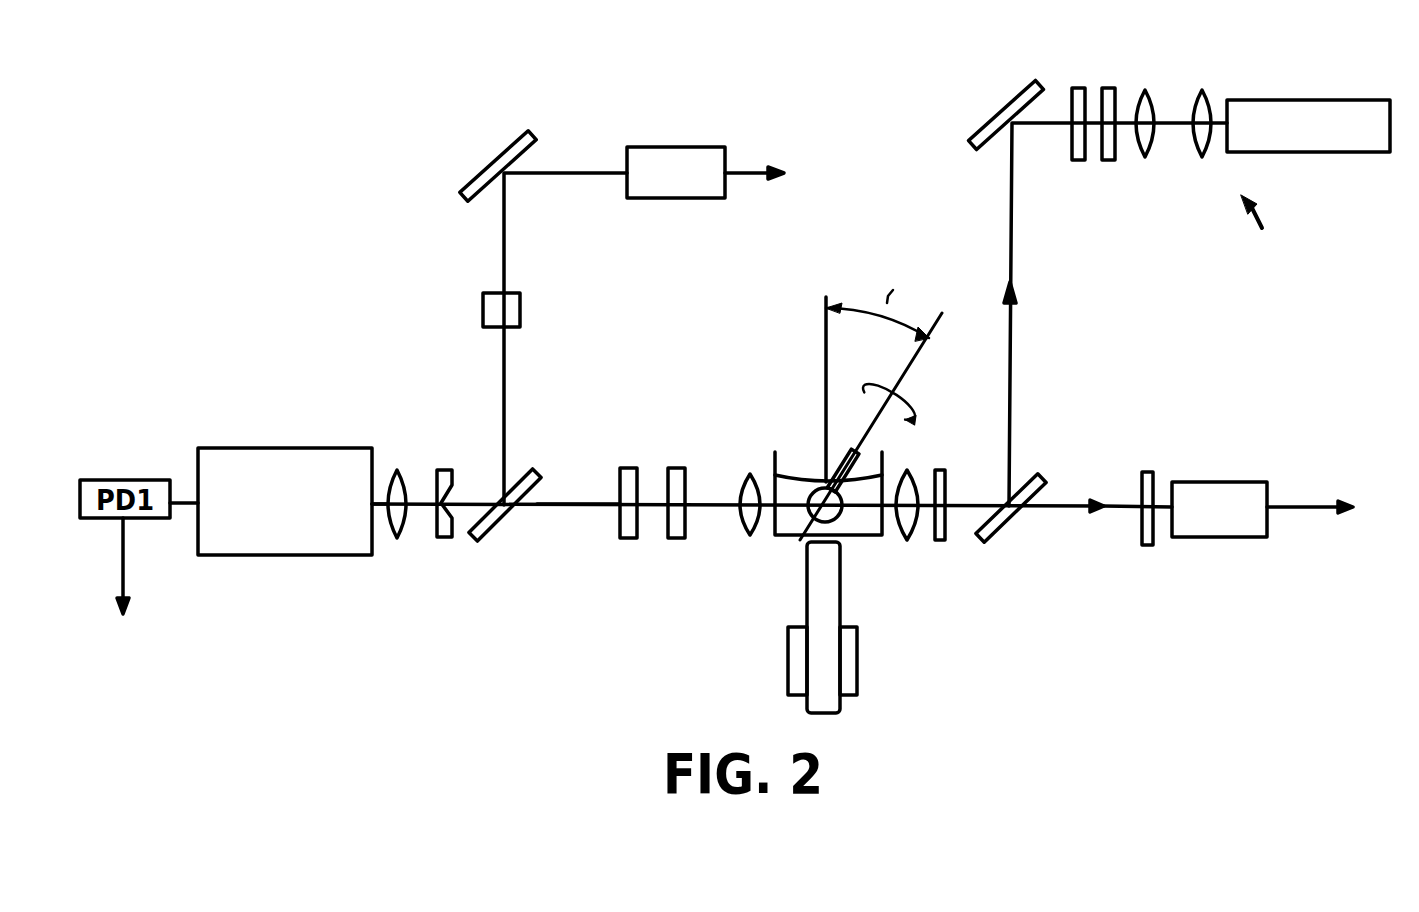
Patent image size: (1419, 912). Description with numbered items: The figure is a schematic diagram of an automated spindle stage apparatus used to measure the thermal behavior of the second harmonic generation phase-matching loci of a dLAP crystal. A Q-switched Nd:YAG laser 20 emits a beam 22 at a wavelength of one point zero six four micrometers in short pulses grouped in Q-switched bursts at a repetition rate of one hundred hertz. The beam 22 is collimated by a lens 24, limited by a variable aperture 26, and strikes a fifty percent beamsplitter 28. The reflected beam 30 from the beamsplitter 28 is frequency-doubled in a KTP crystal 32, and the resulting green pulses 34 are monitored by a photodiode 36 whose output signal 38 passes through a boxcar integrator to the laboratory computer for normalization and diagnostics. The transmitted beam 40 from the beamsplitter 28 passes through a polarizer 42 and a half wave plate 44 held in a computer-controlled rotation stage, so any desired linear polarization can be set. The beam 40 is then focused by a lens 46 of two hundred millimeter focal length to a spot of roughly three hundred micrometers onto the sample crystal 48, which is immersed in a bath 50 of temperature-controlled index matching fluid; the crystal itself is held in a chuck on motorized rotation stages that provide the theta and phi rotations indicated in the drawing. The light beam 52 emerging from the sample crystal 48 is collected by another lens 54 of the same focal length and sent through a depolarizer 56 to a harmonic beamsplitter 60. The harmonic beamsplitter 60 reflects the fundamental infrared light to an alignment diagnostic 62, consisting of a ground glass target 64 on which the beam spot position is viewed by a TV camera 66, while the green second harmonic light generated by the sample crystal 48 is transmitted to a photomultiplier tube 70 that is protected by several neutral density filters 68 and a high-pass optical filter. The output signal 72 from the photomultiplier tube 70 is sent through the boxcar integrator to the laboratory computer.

The Q-switched Nd:YAG laser 20 is at (278, 447).
The beam 22 is at (378, 513).
The lens 24 is at (403, 477).
The variable aperture 26 is at (445, 537).
The 50% beamsplitter 28 is at (495, 533).
The reflected beam 30 is at (505, 400).
The KTP crystal 32 is at (483, 308).
The 532 nm pulses 34 is at (500, 242).
The photodiode 36 is at (678, 143).
The output signal 38 is at (747, 177).
The transmitted beam 40 is at (573, 502).
The polarizer 42 is at (627, 540).
The half wave plate 44 is at (675, 540).
The lens 46 is at (745, 477).
The sample crystal 48 is at (790, 542).
The bath 50 is at (865, 538).
The light beam 52 is at (893, 540).
The lens 54 is at (918, 478).
The depolarizer 56 is at (950, 477).
The harmonic beamsplitter 60 is at (1012, 522).
The alignment diagnostic 62 is at (1263, 237).
The ground glass target 64 is at (1108, 88).
The TV camera 66 is at (1327, 100).
The neutral density filters 68 is at (1150, 472).
The photomultiplier tube 70 is at (1242, 480).
The output signal 72 is at (1302, 507).